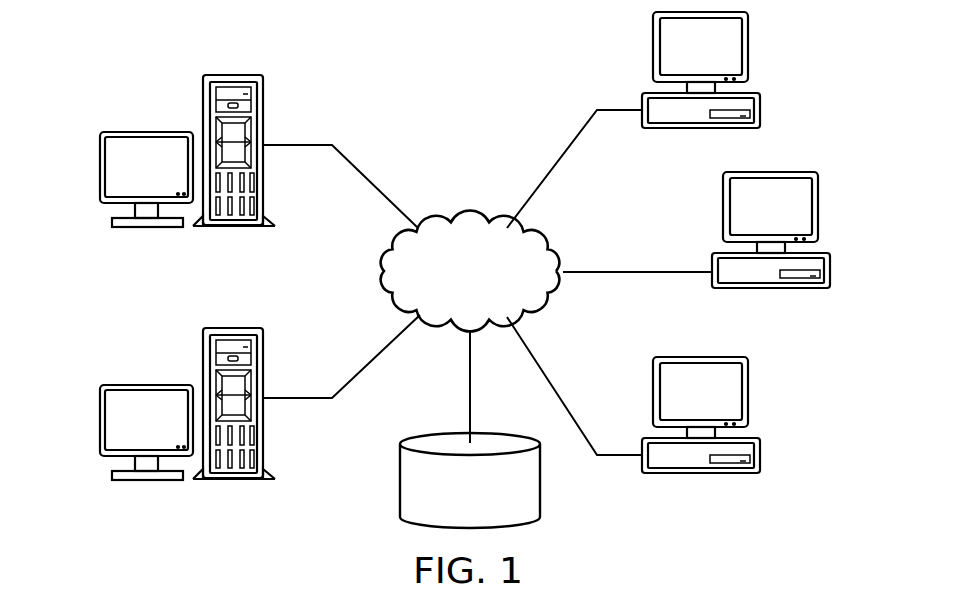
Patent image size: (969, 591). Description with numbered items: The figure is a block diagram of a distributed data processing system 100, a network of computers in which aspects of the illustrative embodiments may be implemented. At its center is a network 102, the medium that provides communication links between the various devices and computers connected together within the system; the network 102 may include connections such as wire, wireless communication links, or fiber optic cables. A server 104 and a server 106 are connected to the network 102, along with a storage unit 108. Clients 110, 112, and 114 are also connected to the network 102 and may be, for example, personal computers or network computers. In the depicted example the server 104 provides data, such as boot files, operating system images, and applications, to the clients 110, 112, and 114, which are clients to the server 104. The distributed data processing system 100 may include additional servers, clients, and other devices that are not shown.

The distributed data processing system 100 is at (334, 64).
The network 102 is at (445, 220).
The server 104 is at (100, 168).
The server 106 is at (100, 420).
The storage unit 108 is at (400, 480).
The client 110 is at (760, 100).
The client 112 is at (830, 280).
The client 114 is at (760, 463).